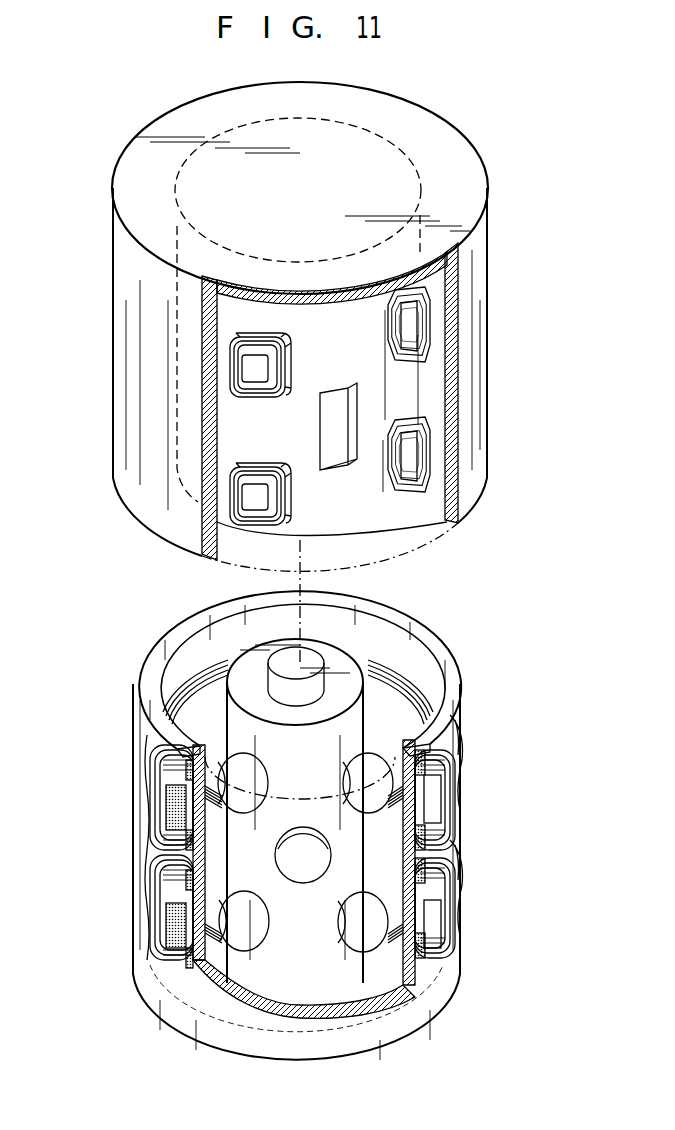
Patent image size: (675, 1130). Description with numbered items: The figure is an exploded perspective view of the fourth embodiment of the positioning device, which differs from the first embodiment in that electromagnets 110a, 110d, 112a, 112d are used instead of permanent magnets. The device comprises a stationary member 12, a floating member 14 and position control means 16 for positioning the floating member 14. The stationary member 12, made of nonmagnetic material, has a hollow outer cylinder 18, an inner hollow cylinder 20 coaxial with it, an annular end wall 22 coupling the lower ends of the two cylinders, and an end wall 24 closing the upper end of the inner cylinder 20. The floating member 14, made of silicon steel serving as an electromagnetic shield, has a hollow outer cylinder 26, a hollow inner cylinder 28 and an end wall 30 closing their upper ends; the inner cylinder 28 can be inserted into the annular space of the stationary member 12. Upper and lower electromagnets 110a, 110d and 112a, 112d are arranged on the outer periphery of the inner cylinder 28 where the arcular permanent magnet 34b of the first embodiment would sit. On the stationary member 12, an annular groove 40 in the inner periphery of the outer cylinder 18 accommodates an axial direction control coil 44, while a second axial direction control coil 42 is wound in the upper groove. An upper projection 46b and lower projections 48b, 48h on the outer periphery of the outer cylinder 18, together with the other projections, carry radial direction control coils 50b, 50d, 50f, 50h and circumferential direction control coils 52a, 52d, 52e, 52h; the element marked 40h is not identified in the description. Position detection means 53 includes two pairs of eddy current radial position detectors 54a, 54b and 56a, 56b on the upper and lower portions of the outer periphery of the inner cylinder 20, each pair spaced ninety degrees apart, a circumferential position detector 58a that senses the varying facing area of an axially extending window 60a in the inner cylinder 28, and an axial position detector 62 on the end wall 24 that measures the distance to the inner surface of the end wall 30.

The stationary member 12 is at (458, 677).
The floating member 14 is at (447, 141).
The position control means 16 is at (131, 723).
The hollow outer cylinder 18 is at (428, 633).
The inner hollow cylinder 20 is at (237, 722).
The annular end wall 22 is at (391, 1004).
The end wall 24 is at (262, 658).
The hollow outer cylinder 26 is at (470, 406).
The hollow inner cylinder 28 is at (346, 528).
The end wall 30 is at (464, 219).
The arcular permanent magnet 34b is at (470, 323).
The lower annular groove 40 is at (208, 931).
The stator pole core 40h is at (428, 809).
The axial direction control coil 42 is at (212, 673).
The axial direction control coil 44 is at (212, 801).
The upper projection 46b is at (177, 806).
The lower projection 48b is at (177, 936).
The lower projection 48h is at (428, 939).
The radial direction control coil 50b is at (141, 794).
The radial direction control coil 50d is at (466, 731).
The radial direction control coil 50f is at (141, 878).
The radial direction control coil 50h is at (467, 871).
The circumferential direction control coil 52a is at (163, 821).
The circumferential direction control coil 52d is at (440, 773).
The circumferential direction control coil 52e is at (178, 986).
The circumferential direction control coil 52h is at (383, 991).
The position detection means 53 is at (283, 991).
The radial position detector 54a is at (267, 790).
The radial position detector 54b is at (378, 763).
The radial position detector 56a is at (252, 911).
The radial position detector 56b is at (358, 936).
The circumferential position detector 58a is at (300, 883).
The axially extending window 60a is at (340, 451).
The axial position detector 62 is at (311, 660).
The electromagnet 110a is at (289, 357).
The electromagnet 110d is at (447, 417).
The electromagnet 112a is at (252, 470).
The electromagnet 112d is at (416, 494).